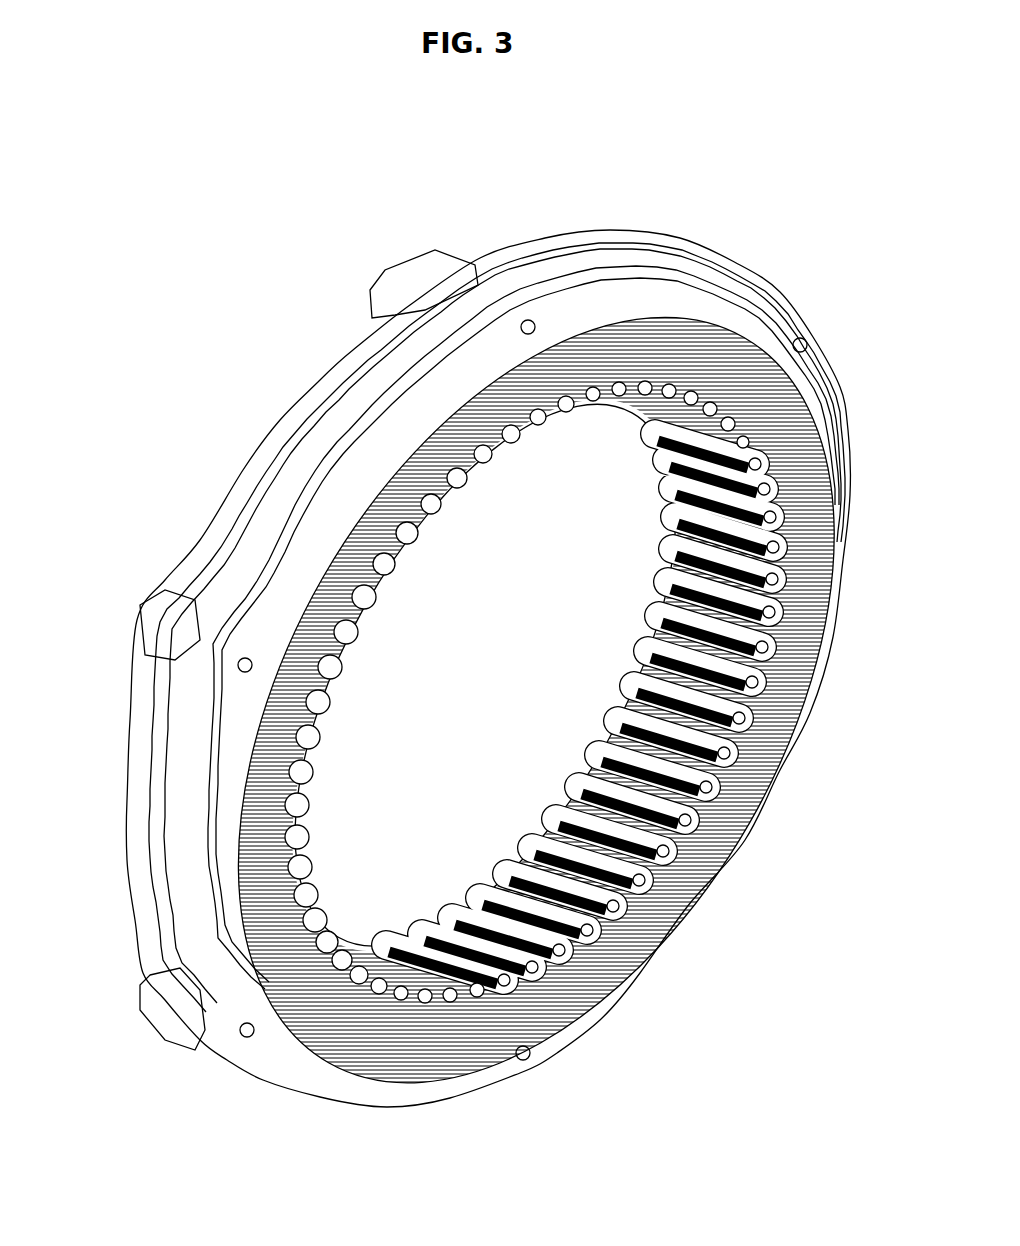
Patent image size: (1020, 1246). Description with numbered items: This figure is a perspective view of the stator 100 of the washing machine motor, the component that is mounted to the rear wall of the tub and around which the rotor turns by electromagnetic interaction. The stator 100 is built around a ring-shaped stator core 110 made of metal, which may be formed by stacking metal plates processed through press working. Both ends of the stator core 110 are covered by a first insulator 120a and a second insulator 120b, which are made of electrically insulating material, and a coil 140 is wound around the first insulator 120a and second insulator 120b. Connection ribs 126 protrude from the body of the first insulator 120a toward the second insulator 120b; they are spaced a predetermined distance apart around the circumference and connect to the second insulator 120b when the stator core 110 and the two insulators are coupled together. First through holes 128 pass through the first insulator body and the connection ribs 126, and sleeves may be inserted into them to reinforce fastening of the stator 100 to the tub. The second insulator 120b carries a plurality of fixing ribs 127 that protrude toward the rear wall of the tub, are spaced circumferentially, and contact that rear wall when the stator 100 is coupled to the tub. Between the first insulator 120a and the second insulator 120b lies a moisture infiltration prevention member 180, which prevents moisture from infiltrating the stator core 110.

The stator 100 is at (470, 138).
The stator core 110 is at (735, 640).
The first insulator 120a is at (726, 300).
The second insulator 120b is at (535, 245).
The connection ribs 126 is at (180, 1018).
The fixing ribs 127 is at (420, 278).
The first through holes 128 is at (810, 348).
The coil 140 is at (806, 430).
The moisture infiltration prevention member 180 is at (350, 408).